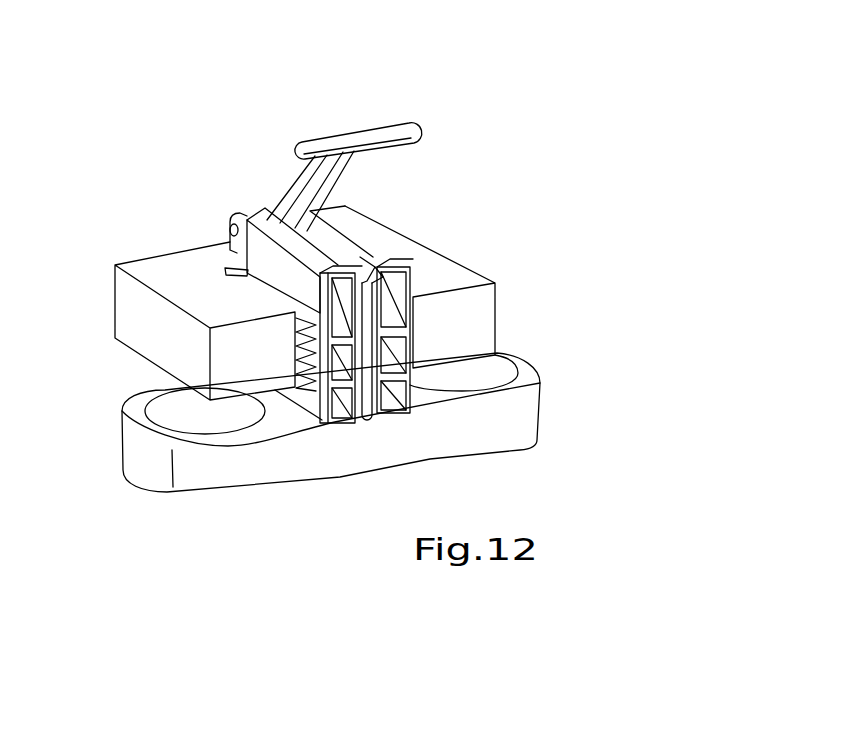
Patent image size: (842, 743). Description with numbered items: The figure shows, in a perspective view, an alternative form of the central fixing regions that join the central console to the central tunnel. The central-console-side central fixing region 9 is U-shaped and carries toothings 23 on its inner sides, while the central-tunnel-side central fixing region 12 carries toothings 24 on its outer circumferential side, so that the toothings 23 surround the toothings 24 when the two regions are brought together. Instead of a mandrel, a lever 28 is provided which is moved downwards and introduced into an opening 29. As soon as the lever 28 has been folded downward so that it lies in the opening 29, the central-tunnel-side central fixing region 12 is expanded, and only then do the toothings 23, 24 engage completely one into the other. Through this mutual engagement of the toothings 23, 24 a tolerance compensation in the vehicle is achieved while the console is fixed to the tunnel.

The central-console-side central fixing region 9 is at (527, 306).
The central-tunnel-side central fixing region 12 is at (362, 437).
The toothings 23 is at (362, 268).
The toothings 24 is at (300, 373).
The lever 28 is at (424, 128).
The opening 29 is at (381, 276).